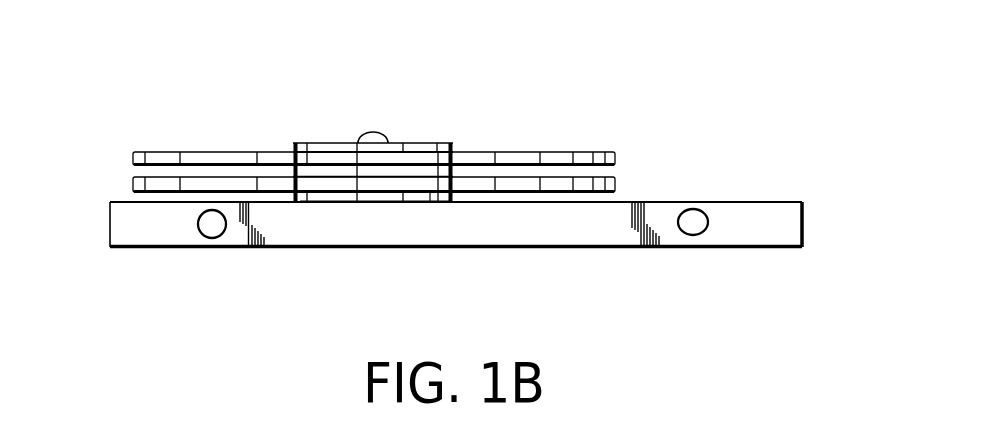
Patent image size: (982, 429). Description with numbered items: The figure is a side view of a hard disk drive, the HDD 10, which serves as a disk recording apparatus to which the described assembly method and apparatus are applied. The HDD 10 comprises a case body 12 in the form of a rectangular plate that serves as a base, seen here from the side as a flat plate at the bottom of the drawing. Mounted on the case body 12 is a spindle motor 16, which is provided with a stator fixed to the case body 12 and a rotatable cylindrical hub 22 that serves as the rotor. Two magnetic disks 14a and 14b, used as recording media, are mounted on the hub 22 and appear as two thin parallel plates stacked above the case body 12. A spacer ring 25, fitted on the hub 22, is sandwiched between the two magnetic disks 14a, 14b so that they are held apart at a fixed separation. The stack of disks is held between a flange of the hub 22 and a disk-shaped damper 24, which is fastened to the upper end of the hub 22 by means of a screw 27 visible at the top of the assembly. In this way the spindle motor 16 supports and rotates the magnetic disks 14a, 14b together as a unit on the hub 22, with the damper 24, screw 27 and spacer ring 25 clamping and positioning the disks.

The hard disk drive 10 is at (774, 155).
The case body 12 is at (590, 229).
The magnetic disk 14a is at (586, 152).
The magnetic disk 14b is at (616, 181).
The spindle motor 16 is at (343, 215).
The hub 22 is at (429, 200).
The damper 24 is at (318, 142).
The spacer ring 25 is at (420, 163).
The screw 27 is at (373, 132).